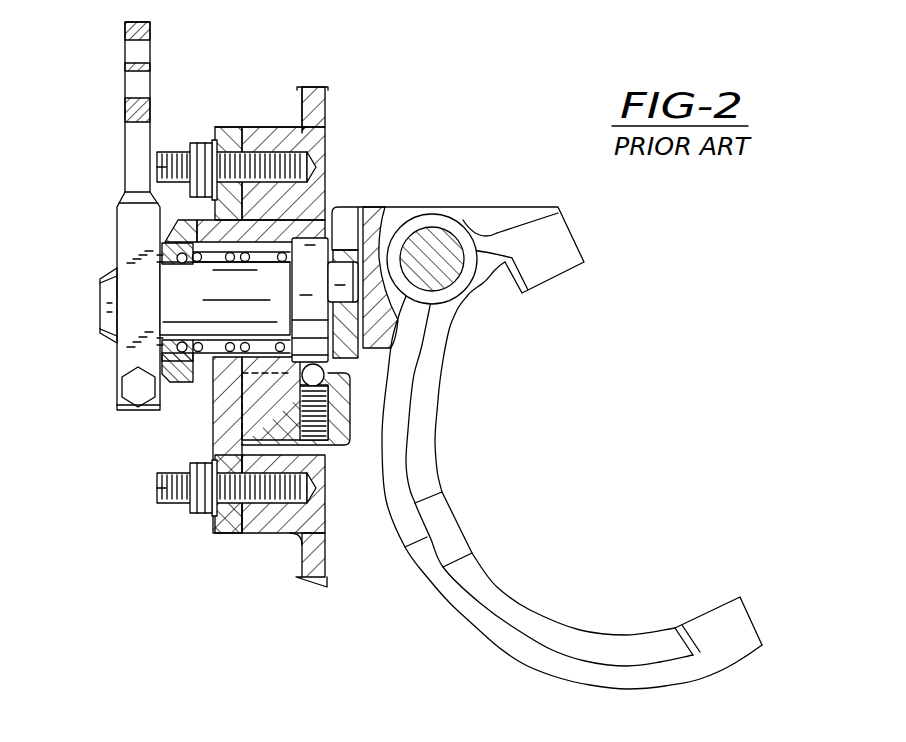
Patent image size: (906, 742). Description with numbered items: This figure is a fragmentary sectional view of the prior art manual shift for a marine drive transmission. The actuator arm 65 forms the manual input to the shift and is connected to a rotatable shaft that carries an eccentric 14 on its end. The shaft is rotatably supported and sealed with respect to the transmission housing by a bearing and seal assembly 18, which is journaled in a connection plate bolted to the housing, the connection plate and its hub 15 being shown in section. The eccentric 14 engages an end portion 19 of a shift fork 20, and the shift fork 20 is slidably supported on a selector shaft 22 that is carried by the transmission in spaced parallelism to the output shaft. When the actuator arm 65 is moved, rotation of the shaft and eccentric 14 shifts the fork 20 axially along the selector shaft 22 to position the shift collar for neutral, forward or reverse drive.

The eccentric 14 is at (343, 277).
The hub 15 is at (270, 128).
The bearing and seal assembly 18 is at (203, 372).
The end portion 19 is at (381, 227).
The shift fork 20 is at (597, 243).
The selector shaft 22 is at (455, 232).
The actuator arm 65 is at (135, 146).